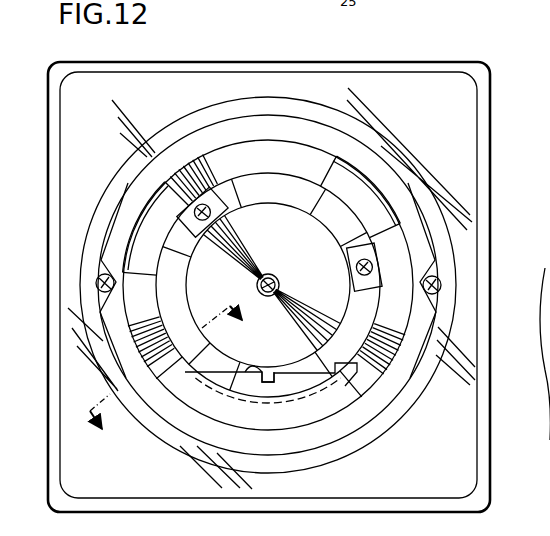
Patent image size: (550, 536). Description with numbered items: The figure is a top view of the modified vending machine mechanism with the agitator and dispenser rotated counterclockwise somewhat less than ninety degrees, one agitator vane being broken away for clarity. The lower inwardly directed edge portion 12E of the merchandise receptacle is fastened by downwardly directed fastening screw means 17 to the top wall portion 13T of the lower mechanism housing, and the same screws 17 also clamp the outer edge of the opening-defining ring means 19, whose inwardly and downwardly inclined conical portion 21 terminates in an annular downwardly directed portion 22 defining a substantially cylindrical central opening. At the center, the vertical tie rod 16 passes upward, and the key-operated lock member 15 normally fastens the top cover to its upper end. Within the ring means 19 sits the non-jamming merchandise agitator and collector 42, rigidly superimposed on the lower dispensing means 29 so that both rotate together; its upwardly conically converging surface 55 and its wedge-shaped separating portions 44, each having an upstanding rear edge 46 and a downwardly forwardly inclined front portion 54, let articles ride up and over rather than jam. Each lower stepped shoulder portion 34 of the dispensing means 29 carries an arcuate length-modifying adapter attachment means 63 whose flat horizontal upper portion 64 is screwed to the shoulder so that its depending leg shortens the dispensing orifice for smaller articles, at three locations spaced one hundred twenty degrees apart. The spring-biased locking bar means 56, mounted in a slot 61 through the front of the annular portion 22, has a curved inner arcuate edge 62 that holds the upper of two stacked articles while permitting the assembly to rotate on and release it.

The lower inwardly directed edge portion 12E is at (490, 262).
The top wall portion 13T is at (458, 80).
The annular downwardly directed portion 22 is at (282, 142).
The opening-defining ring means 19 is at (160, 170).
The conical portion 21 is at (230, 154).
The separating non-apertured portion 44 is at (136, 232).
The rear edge 46 is at (152, 210).
The inclined front portion 54 is at (262, 276).
The non-jamming merchandise agitator and collector 42 is at (268, 190).
The lower dispensing means 29 is at (302, 190).
The arcuate length-modifying adapter attachment means 63 is at (214, 180).
The lower stepped shoulder portion 34 is at (174, 222).
The fastening screw means 17 is at (96, 283).
The slot 61 is at (360, 352).
The upwardly conically converging surface 55 is at (268, 285).
The vertical tie rod 16 is at (280, 282).
The flat horizontal upper portion 64 is at (246, 204).
The spring-biased locking bar means 56 is at (260, 388).
The curved inner arcuate edge 62 is at (248, 370).
The key-operated lock member 15 is at (175, 380).